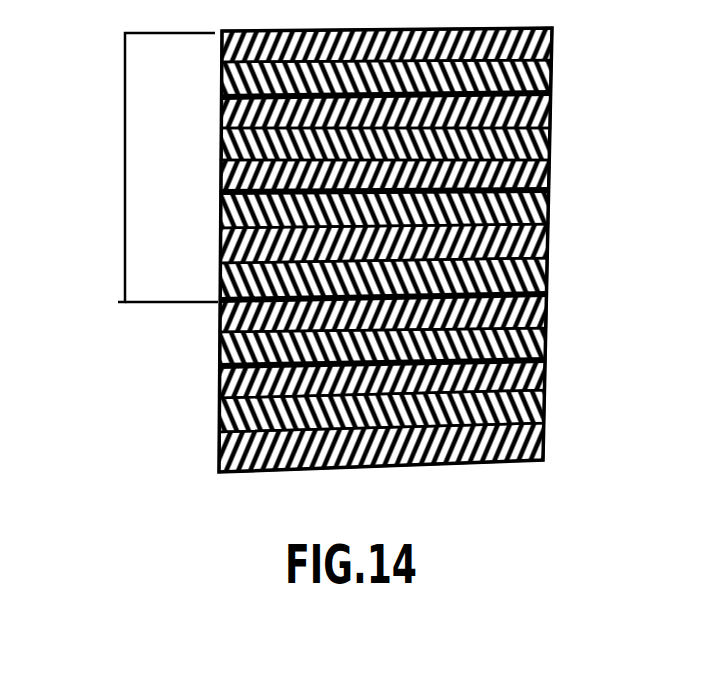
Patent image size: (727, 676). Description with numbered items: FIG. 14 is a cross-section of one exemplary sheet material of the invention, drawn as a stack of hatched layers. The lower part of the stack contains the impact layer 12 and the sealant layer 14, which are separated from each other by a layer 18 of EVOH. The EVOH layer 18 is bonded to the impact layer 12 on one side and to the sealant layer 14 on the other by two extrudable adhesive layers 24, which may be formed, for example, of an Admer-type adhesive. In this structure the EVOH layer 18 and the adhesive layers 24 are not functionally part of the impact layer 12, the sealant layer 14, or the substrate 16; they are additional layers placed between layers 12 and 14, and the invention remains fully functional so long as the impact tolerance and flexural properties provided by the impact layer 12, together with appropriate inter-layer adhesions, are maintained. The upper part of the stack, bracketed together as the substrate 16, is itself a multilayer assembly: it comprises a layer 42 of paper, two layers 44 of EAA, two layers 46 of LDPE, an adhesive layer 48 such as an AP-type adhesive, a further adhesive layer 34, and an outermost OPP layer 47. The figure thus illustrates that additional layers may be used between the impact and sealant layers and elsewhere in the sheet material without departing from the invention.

The impact layer 12 is at (550, 313).
The sealant layer 14 is at (548, 450).
The substrate 16 is at (125, 197).
The layer of EVOH 18 is at (548, 383).
The extrudable adhesive layers 24 is at (550, 345).
The adhesive layer 34 is at (555, 75).
The layer of paper 42 is at (552, 183).
The layers of EAA 44 is at (552, 152).
The layers of LDPE 46 is at (552, 118).
The OPP layer 47 is at (557, 47).
The adhesive layer 48 is at (550, 277).